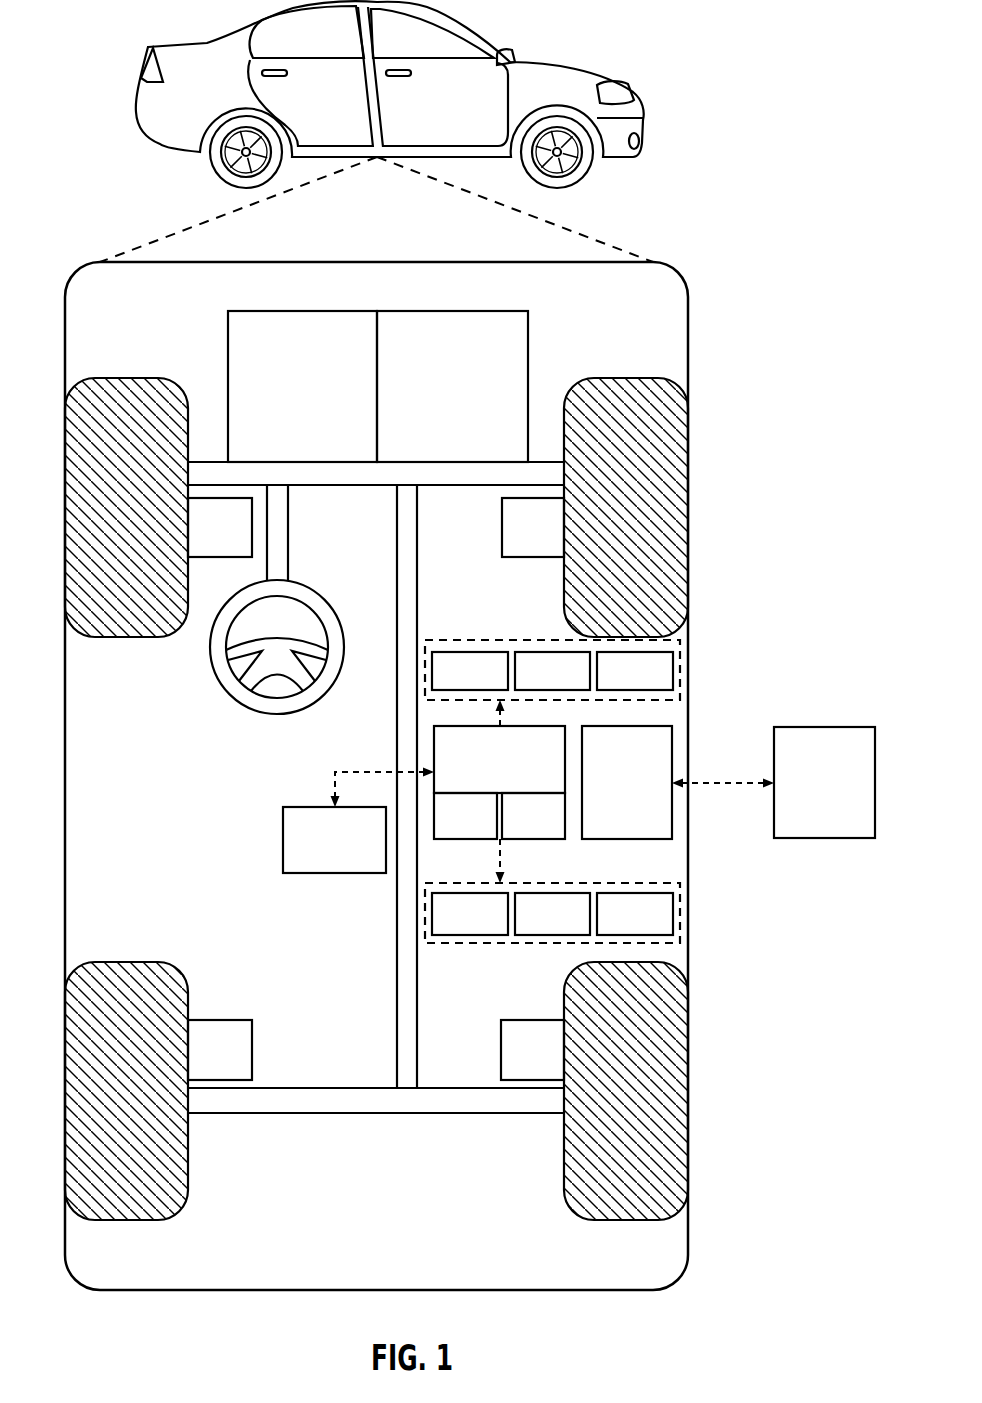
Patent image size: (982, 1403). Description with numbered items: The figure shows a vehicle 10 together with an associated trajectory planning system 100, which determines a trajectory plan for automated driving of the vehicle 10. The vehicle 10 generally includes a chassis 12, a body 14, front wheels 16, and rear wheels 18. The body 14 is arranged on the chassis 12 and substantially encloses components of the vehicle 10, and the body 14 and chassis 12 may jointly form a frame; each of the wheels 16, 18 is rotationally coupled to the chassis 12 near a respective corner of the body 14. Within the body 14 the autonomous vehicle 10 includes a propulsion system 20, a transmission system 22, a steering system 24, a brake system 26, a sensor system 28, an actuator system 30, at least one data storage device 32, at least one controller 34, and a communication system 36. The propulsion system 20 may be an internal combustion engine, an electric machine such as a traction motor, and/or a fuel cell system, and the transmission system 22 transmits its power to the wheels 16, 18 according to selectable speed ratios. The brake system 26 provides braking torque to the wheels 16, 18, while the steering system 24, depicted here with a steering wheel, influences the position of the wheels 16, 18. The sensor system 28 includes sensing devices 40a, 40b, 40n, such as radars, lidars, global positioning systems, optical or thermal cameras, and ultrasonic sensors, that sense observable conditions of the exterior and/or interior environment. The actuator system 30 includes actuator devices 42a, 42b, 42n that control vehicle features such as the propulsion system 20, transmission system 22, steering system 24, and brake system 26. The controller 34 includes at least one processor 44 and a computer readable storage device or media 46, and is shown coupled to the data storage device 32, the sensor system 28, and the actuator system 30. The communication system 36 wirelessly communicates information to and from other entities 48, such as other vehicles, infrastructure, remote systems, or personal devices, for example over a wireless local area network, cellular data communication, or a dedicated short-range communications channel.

The vehicle 10 is at (140, 78).
The trajectory planning system 100 is at (394, 768).
The chassis 12 is at (397, 955).
The body 14 is at (65, 738).
The front wheels 16 is at (127, 378).
The rear wheels 18 is at (127, 1222).
The propulsion system 20 is at (288, 399).
The transmission system 22 is at (438, 399).
The steering system 24 is at (302, 556).
The brake system 26 is at (206, 542).
The sensor system 28 is at (552, 653).
The actuator system 30 is at (552, 932).
The data storage device 32 is at (320, 855).
The controller 34 is at (486, 778).
The communication system 36 is at (613, 798).
The sensing device 40a is at (450, 684).
The sensing device 40b is at (532, 684).
The sensing device 40n is at (615, 684).
The actuator device 42a is at (450, 927).
The actuator device 42b is at (532, 927).
The actuator device 42n is at (615, 927).
The processor 44 is at (452, 834).
The computer readable storage device or media 46 is at (519, 834).
The other entities 48 is at (811, 796).